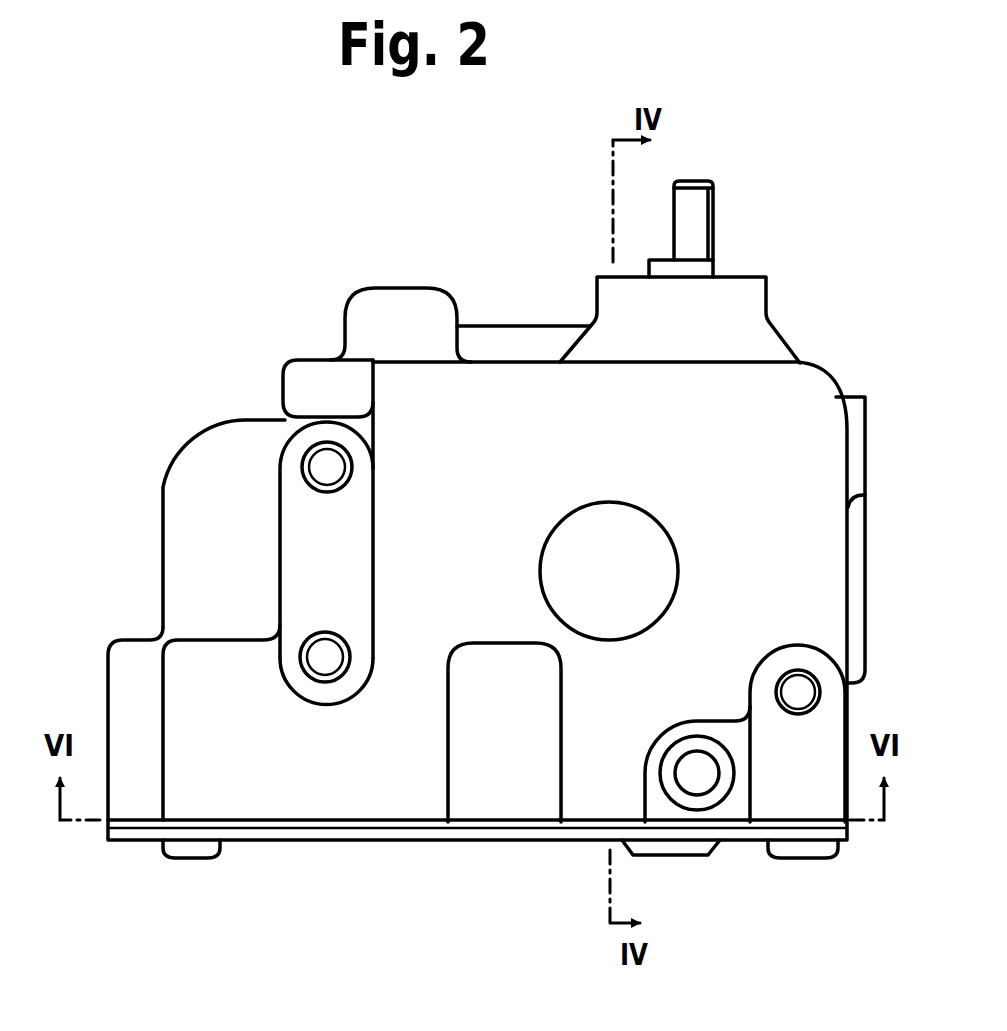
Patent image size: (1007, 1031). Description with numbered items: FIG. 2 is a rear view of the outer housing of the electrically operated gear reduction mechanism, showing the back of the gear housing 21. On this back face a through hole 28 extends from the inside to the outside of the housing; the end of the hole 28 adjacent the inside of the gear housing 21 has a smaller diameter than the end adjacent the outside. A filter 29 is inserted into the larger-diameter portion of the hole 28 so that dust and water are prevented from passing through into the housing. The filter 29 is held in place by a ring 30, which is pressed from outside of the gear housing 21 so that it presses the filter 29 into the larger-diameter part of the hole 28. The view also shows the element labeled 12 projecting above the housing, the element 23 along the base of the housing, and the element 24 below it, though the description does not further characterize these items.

The terminal bolt 12 is at (720, 213).
The gear housing 21 is at (805, 392).
The base plate 23 is at (532, 826).
The mounting foot 24 is at (462, 834).
The through hole 28 is at (698, 762).
The filter 29 is at (695, 783).
The ring 30 is at (720, 787).